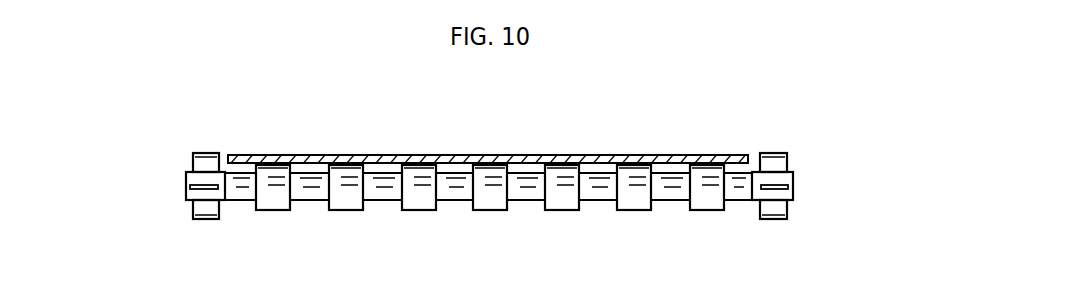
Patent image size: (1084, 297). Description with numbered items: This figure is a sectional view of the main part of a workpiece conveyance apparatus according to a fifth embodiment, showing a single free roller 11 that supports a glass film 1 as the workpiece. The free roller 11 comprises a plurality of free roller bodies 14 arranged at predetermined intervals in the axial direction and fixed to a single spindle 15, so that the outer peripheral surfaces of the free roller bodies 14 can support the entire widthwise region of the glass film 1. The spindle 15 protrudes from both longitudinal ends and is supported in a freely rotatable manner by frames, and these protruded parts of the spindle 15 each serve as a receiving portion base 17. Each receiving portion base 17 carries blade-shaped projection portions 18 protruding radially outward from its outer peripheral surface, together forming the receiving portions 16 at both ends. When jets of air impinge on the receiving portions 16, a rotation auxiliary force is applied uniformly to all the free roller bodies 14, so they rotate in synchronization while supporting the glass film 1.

The glass film 1 is at (497, 160).
The free roller 11 is at (497, 215).
The free roller body 14 is at (483, 210).
The spindle 15 is at (486, 173).
The receiving portion 16 is at (201, 152).
The receiving portion base 17 is at (186, 177).
The projection portion 18 is at (190, 187).